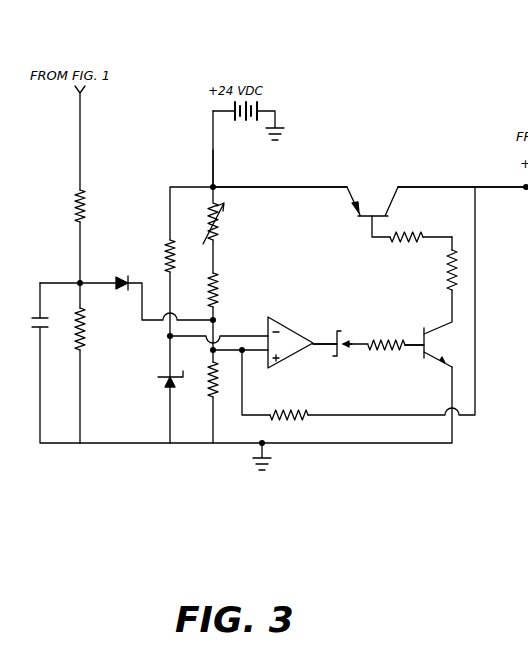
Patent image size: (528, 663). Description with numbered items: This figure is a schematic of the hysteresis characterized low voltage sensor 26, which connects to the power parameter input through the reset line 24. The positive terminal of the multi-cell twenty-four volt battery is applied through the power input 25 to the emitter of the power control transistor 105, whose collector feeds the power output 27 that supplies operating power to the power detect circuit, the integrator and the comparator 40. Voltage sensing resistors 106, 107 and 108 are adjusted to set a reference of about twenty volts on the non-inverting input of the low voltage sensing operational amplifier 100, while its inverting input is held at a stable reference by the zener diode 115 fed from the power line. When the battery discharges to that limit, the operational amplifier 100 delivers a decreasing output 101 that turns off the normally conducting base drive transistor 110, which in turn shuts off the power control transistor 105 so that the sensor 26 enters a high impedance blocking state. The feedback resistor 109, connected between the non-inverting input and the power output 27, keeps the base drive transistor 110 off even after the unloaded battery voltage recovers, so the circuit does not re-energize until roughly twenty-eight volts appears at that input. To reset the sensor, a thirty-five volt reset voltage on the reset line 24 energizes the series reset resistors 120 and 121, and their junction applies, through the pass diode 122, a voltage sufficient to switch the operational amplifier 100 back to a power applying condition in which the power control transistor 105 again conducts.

The reset line 24 is at (81, 150).
The reset resistor 120 is at (84, 203).
The reset resistor 121 is at (84, 331).
The pass diode 122 is at (110, 281).
The power input 25 is at (212, 168).
The comparator 40 is at (240, 126).
The voltage sensing resistor 106 is at (217, 231).
The voltage sensing resistor 107 is at (218, 290).
The voltage sensing resistor 108 is at (209, 387).
The feedback resistor 109 is at (296, 411).
The reference voltage zener diode 115 is at (158, 377).
The low voltage sensing operational amplifier 100 is at (292, 342).
The output 101 is at (322, 345).
The power control transistor 105 is at (370, 218).
The base drive transistor 110 is at (416, 346).
The low voltage sensor 26 is at (358, 153).
The power output 27 is at (487, 190).